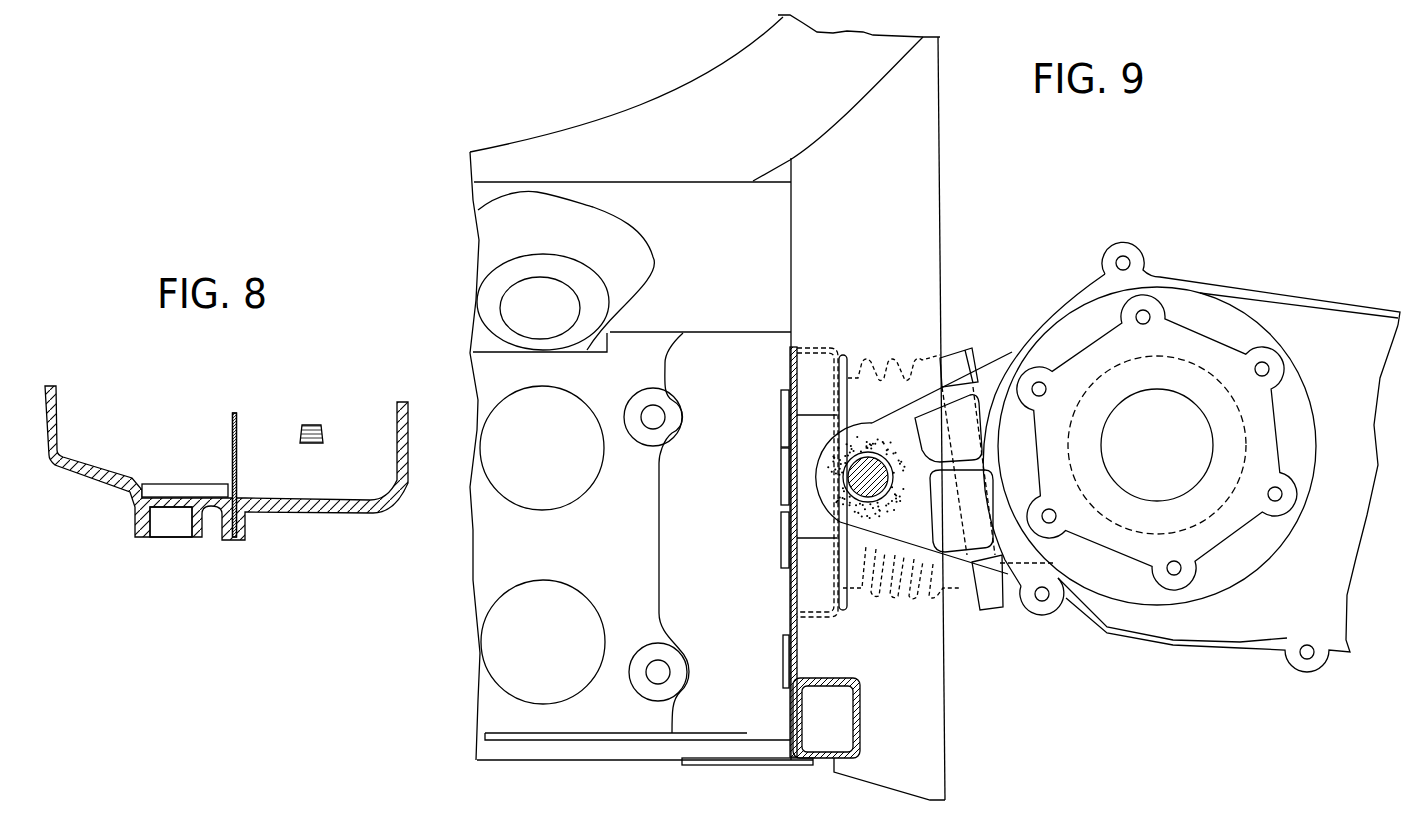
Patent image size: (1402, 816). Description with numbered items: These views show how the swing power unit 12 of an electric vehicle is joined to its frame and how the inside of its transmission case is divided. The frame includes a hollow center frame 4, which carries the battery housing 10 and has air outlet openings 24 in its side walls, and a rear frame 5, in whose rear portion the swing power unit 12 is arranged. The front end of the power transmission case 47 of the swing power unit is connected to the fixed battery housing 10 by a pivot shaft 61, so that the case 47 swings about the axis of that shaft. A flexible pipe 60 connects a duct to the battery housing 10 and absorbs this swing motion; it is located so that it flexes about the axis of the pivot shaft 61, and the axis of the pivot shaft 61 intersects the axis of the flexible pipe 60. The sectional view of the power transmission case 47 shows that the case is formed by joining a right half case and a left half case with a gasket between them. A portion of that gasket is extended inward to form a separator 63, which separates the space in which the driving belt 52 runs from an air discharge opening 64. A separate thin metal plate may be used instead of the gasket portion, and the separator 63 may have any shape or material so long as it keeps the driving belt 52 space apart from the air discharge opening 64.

In FIG. 9, the center frame 4 is at (638, 182).
In FIG. 9, the rear frame 5 is at (657, 100).
In FIG. 9, the battery housing 10 is at (573, 738).
In FIG. 9, the swing power unit 12 is at (1305, 300).
In FIG. 9, the air outlet openings 24 is at (500, 307).
In FIG. 8, the power transmission case 47 is at (47, 423).
In FIG. 8, the driving belt 52 is at (325, 430).
In FIG. 9, the flexible pipe 60 is at (868, 362).
In FIG. 9, the pivot shaft 61 is at (871, 497).
In FIG. 8, the separator 63 is at (230, 442).
In FIG. 8, the air discharge opening 64 is at (147, 528).